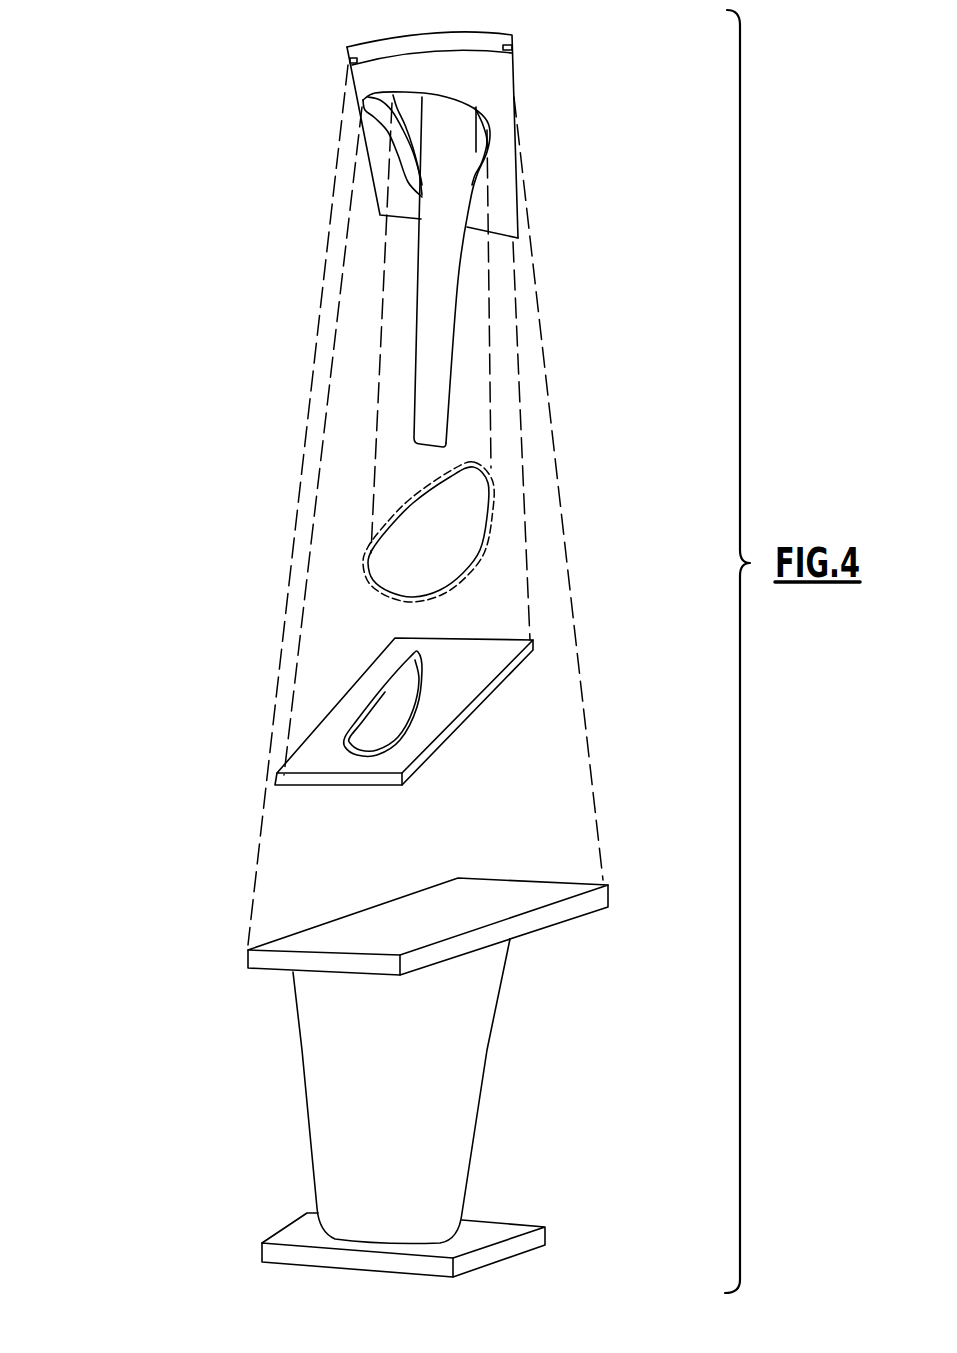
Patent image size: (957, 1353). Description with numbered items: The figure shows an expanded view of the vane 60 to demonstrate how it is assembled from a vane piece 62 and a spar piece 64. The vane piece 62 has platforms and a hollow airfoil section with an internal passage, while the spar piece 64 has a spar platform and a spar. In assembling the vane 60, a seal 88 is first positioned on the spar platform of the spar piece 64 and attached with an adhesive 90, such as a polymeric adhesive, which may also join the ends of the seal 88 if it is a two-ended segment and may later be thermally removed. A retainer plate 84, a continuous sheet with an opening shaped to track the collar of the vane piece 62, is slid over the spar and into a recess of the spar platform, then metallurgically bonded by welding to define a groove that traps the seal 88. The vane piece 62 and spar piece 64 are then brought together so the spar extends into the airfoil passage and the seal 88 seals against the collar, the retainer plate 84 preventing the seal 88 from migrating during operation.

The vane 60 is at (331, 505).
The vane piece 62 is at (462, 1108).
The spar piece 64 is at (524, 134).
The retainer plate 84 is at (447, 735).
The seal 88 is at (465, 572).
The adhesive 90 is at (374, 590).